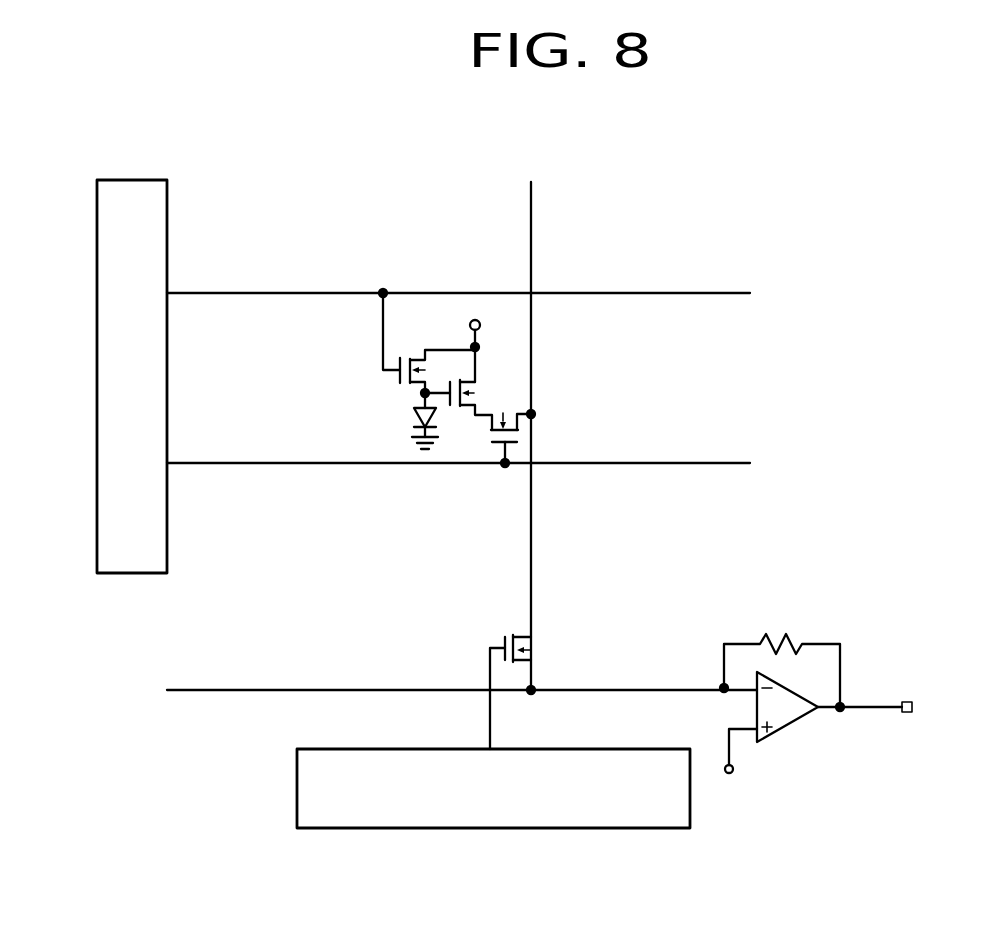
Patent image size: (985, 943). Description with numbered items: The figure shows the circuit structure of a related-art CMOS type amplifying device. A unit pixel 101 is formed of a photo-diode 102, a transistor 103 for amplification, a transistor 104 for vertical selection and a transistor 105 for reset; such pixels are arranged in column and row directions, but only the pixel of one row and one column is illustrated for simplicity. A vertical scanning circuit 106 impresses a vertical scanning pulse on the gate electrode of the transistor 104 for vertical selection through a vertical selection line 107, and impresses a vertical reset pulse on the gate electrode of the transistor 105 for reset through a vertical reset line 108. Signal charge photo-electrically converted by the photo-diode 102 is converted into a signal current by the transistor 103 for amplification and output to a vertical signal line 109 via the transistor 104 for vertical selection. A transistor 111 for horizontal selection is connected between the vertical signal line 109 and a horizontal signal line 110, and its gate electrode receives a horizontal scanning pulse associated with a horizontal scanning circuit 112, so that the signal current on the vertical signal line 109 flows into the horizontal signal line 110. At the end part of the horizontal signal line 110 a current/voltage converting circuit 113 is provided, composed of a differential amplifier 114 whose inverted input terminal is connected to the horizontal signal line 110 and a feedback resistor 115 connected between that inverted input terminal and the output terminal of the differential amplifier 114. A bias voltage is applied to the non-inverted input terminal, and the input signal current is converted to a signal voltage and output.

The unit pixel 101 is at (473, 313).
The photo-diode 102 is at (410, 417).
The transistor for amplification 103 is at (482, 387).
The transistor for vertical selection 104 is at (507, 412).
The transistor for reset 105 is at (428, 362).
The vertical scanning circuit 106 is at (138, 178).
The vertical selection line 107 is at (560, 462).
The vertical reset line 108 is at (657, 292).
The vertical signal line 109 is at (532, 528).
The horizontal signal line 110 is at (333, 688).
The transistor for horizontal selection 111 is at (528, 643).
The horizontal scanning circuit 112 is at (333, 830).
The current/voltage converting circuit 113 is at (850, 659).
The differential amplifier 114 is at (786, 712).
The feedback resistor 115 is at (782, 632).